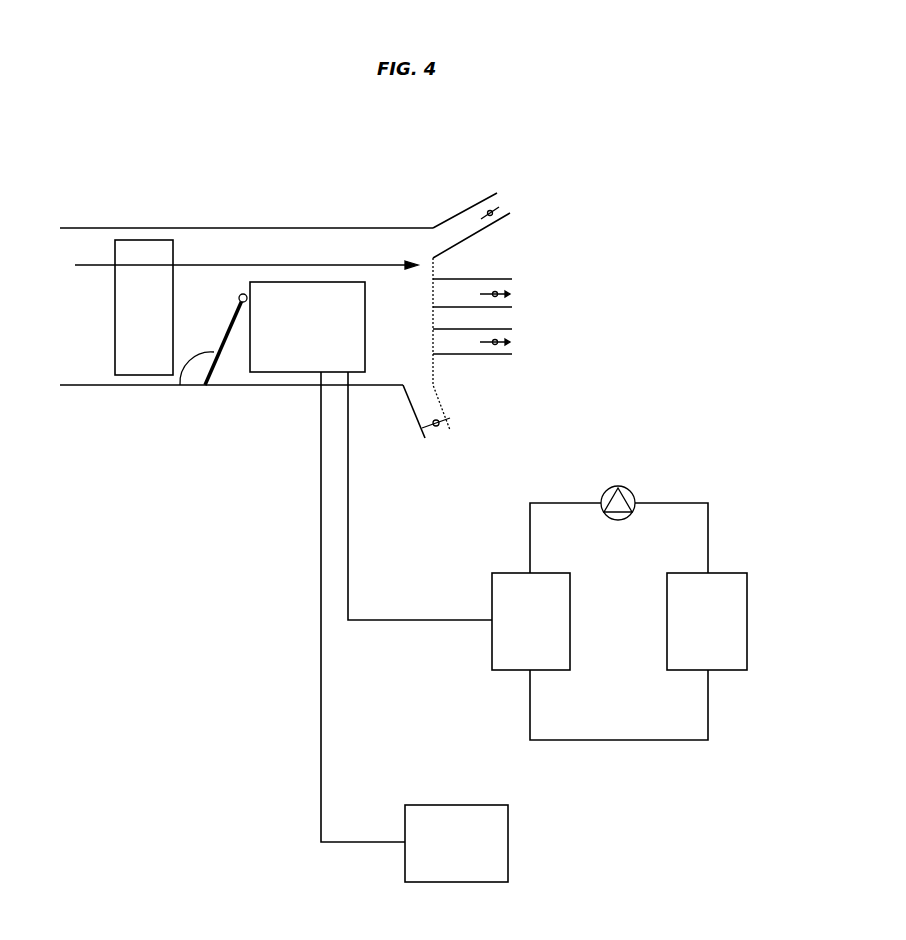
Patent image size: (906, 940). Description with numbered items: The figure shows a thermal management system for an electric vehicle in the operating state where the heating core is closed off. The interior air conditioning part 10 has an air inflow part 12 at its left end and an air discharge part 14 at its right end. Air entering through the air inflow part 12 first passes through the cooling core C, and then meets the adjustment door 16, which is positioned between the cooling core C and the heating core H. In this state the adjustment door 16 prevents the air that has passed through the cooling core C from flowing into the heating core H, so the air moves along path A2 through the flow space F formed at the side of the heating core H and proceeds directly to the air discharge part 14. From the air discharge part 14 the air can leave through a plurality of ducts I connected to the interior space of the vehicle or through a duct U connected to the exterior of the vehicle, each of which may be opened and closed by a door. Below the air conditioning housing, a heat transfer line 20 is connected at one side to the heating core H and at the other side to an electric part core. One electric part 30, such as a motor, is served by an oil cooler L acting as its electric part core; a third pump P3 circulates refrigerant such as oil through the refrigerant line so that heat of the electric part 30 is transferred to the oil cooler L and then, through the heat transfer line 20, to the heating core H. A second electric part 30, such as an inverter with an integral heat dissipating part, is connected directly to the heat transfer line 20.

The interior air conditioning part 10 is at (425, 207).
The air inflow part 12 is at (76, 325).
The air discharge part 14 is at (397, 329).
The adjustment door 16 is at (183, 385).
The heat transfer line 20 is at (321, 650).
The electric part 30 is at (733, 665).
The cooling core C is at (147, 250).
The flow space F is at (308, 245).
The heating core H is at (275, 372).
The duct connected to the interior space of the vehicle I is at (473, 230).
The duct connected to the exterior of the vehicle U is at (437, 403).
The third pump P3 is at (620, 487).
The oil cooler L is at (492, 662).
The path A2 is at (368, 253).